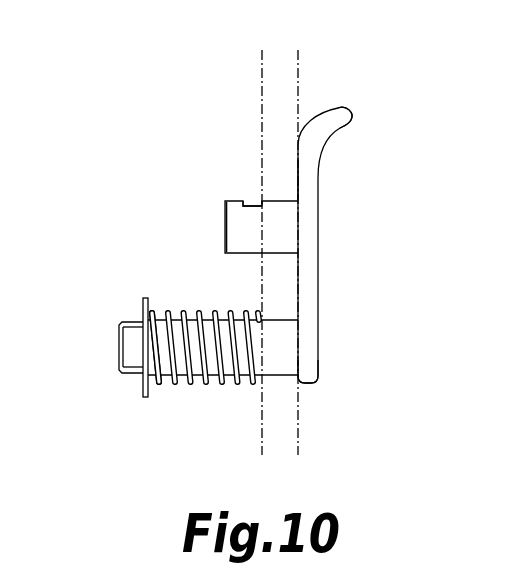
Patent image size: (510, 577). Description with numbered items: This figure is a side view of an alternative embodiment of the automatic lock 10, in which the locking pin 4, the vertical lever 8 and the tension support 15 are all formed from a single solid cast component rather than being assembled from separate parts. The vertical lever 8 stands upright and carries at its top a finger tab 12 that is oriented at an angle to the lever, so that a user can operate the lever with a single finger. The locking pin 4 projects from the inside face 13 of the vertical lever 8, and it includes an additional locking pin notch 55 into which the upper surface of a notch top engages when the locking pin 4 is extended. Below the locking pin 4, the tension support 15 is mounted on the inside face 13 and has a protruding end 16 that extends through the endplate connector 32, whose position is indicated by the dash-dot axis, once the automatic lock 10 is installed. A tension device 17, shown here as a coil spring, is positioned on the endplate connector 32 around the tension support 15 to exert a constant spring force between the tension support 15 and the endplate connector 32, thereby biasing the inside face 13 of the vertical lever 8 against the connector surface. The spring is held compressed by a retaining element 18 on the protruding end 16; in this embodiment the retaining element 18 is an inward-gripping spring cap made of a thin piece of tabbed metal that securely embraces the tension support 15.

The automatic lock 10 is at (208, 135).
The endplate connector 32 is at (298, 75).
The inside face 13 is at (297, 185).
The finger tab 12 is at (351, 112).
The locking pin notch 55 is at (253, 200).
The locking pin 4 is at (226, 201).
The vertical lever 8 is at (318, 292).
The tension support 15 is at (278, 365).
The protruding end 16 is at (172, 382).
The tension device 17 is at (243, 386).
The retaining element 18 is at (120, 360).